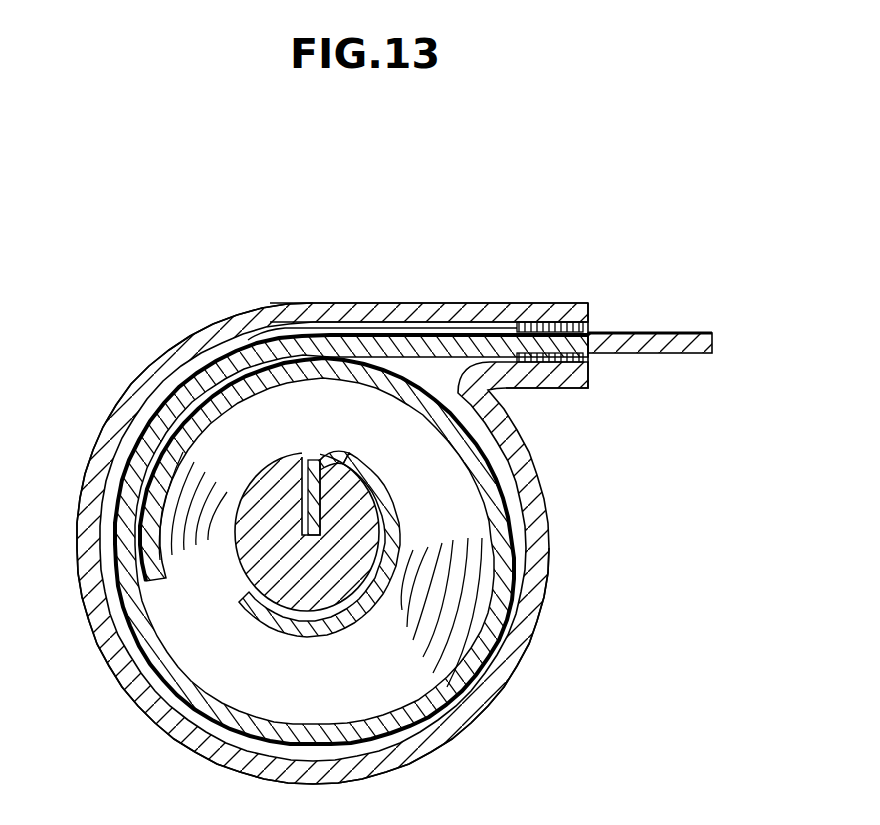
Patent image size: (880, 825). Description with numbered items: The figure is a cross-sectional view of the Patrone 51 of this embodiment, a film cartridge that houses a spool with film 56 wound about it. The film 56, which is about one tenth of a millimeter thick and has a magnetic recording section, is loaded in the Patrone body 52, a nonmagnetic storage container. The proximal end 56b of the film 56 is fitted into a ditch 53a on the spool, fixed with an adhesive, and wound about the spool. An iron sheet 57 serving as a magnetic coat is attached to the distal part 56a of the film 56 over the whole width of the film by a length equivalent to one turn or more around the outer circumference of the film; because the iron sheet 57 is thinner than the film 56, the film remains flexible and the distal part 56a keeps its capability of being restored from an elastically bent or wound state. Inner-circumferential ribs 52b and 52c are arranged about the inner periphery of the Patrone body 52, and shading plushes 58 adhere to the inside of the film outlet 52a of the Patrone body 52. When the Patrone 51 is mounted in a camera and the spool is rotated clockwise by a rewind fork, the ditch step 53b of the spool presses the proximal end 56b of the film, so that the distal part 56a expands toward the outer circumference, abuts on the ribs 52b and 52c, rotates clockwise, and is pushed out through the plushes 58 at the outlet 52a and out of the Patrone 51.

The Patrone 51 is at (430, 757).
The Patrone body 52 is at (170, 722).
The film outlet 52a is at (562, 302).
The inner-circumferential rib 52b is at (360, 313).
The inner-circumferential rib 52c is at (360, 313).
The ditch 53a is at (323, 495).
The ditch step 53b is at (308, 452).
The film 56 is at (500, 593).
The distal part of the film 56a is at (688, 352).
The proximal end of the film 56b is at (310, 452).
The iron sheet 57 is at (690, 332).
The shading plushes 58 is at (587, 328).